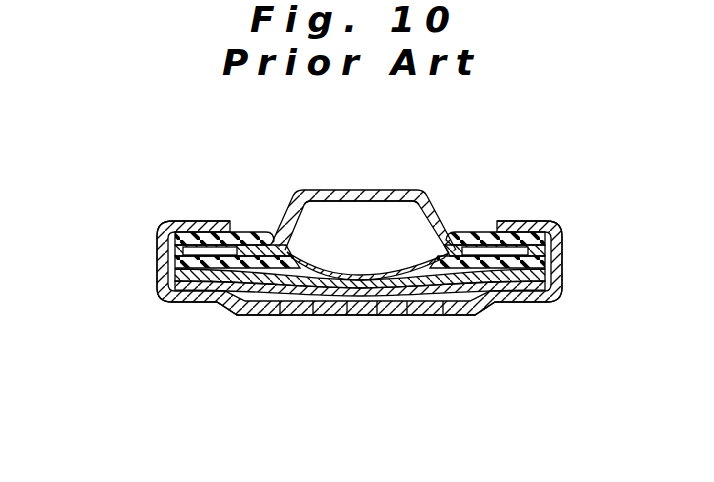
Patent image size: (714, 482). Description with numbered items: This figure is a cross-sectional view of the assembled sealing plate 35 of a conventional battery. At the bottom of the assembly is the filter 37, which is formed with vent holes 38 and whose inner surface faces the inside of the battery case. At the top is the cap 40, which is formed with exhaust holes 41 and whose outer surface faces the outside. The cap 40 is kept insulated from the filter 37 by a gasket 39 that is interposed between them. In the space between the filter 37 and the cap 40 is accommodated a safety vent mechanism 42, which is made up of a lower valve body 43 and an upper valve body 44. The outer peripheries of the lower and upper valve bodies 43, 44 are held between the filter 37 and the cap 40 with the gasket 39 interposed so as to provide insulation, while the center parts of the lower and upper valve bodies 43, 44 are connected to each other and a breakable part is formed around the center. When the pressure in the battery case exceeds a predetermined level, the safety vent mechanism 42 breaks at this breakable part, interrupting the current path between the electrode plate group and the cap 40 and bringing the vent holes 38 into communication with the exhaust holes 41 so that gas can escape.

The assembled sealing plate 35 is at (146, 228).
The filter 37 is at (477, 316).
The vent holes 38 is at (362, 310).
The gasket 39 is at (183, 256).
The cap 40 is at (380, 200).
The exhaust holes 41 is at (290, 211).
The safety vent mechanism 42 is at (338, 266).
The lower valve body 43 is at (293, 284).
The upper valve body 44 is at (304, 266).